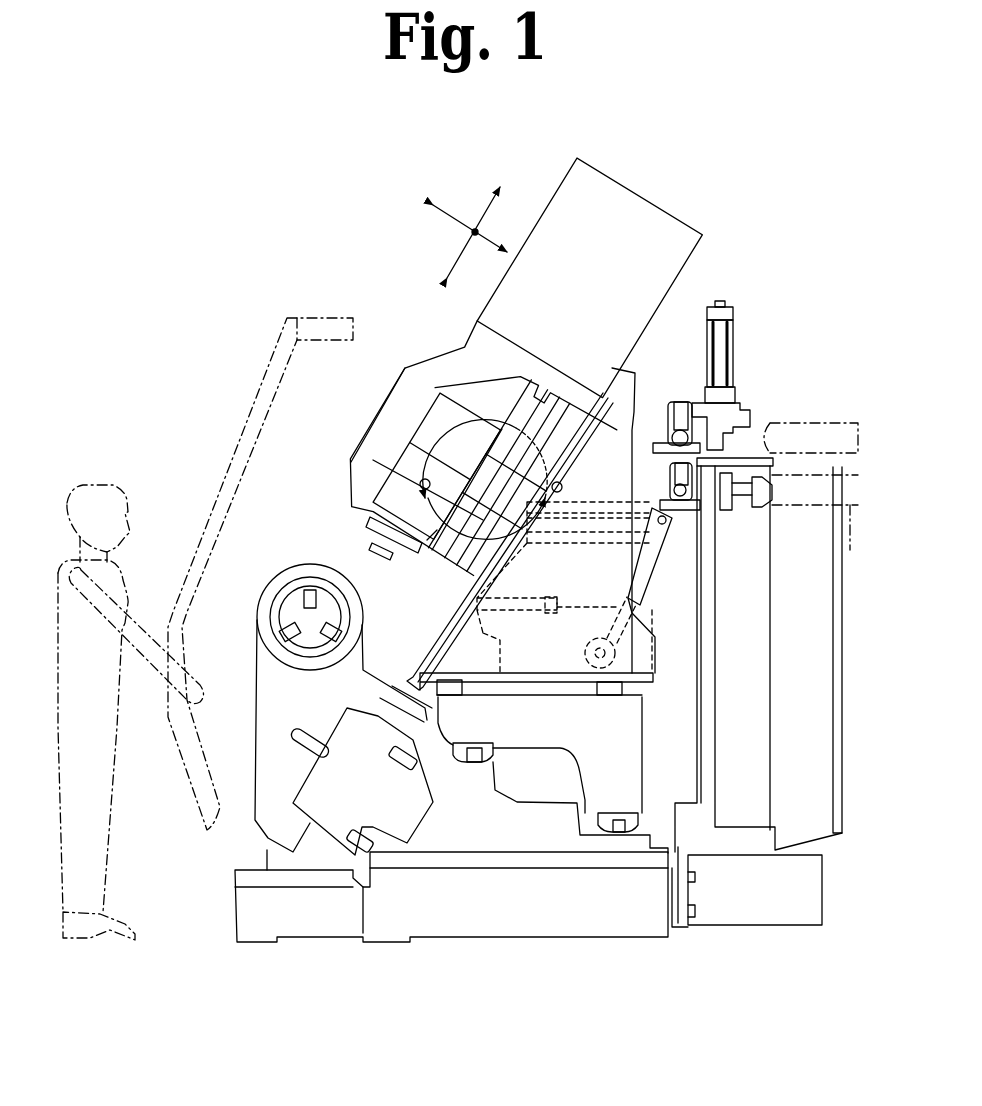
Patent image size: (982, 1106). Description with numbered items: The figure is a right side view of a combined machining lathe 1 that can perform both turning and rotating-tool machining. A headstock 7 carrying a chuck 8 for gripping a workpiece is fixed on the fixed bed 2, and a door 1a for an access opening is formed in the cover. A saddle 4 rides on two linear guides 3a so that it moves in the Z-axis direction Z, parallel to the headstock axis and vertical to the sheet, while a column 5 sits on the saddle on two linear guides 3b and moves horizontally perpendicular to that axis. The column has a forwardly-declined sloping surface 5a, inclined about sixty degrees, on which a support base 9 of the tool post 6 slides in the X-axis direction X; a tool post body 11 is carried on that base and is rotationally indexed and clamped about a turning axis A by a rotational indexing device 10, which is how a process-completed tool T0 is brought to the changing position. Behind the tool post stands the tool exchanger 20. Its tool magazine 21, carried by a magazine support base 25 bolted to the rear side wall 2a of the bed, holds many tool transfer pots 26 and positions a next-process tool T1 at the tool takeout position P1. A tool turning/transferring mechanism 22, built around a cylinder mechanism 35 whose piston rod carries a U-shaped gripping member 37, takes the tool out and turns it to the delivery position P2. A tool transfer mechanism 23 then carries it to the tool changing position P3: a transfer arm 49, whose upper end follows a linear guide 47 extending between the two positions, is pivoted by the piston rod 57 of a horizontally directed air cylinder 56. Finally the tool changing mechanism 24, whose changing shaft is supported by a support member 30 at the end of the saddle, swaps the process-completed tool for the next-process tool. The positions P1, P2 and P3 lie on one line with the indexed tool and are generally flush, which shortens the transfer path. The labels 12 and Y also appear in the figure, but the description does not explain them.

The combined machining lathe 1 is at (400, 213).
The door 1a is at (250, 402).
The fixed bed 2 is at (226, 885).
The rear side wall 2a is at (682, 905).
The linear guides 3a is at (500, 757).
The linear guides 3b is at (625, 695).
The saddle 4 is at (648, 756).
The column 5 is at (410, 642).
The sloping surface 5a is at (418, 656).
The tool post 6 is at (425, 340).
The headstock 7 is at (275, 570).
The chuck 8 is at (305, 588).
The support base 9 is at (443, 563).
The rotational indexing device 10 is at (428, 557).
The tool post body 11 is at (418, 547).
The tool axis 12 is at (362, 520).
The tool exchanger 20 is at (798, 306).
The tool magazine 21 is at (834, 582).
The tool turning/transferring mechanism 22 is at (736, 372).
The tool transfer mechanism 23 is at (700, 545).
The tool changing mechanism 24 is at (490, 418).
The magazine support base 25 is at (822, 846).
The tool transfer pots 26 is at (720, 493).
The support member 30 is at (716, 688).
The cylinder mechanism 35 is at (733, 327).
The gripping member 37 is at (750, 415).
The linear guide 47 is at (656, 496).
The transfer arm 49 is at (645, 572).
The air cylinder 56 is at (513, 613).
The piston rod 57 is at (577, 610).
The turning axis A is at (390, 455).
The X-axis X is at (455, 250).
The Y axis Y is at (474, 230).
The Z-axis Z is at (471, 276).
The process-completed tool T0 is at (360, 478).
The next-process tool T1 is at (680, 400).
The tool takeout position P1 is at (737, 503).
The delivery position P2 is at (683, 503).
The tool changing position P3 is at (563, 486).